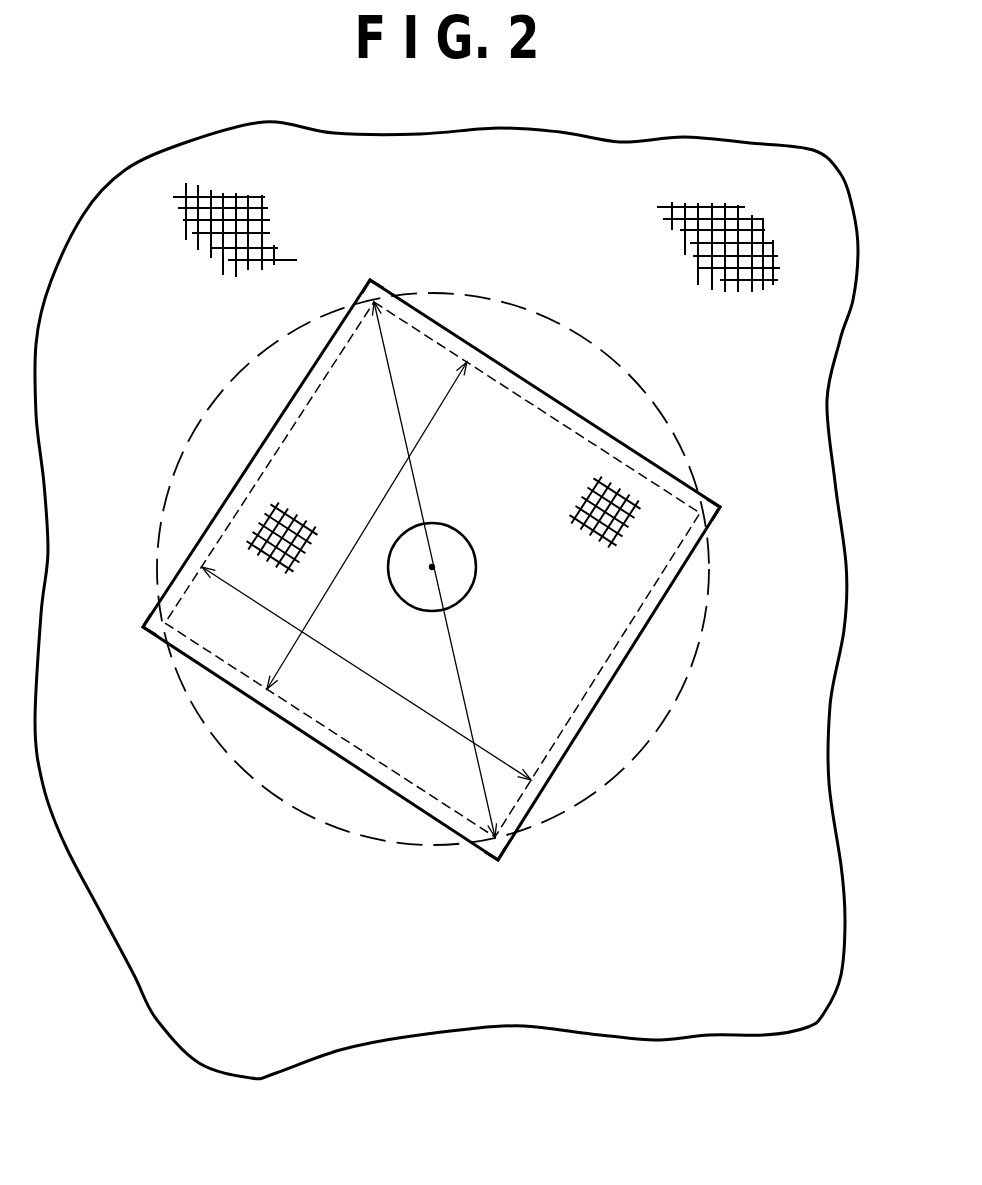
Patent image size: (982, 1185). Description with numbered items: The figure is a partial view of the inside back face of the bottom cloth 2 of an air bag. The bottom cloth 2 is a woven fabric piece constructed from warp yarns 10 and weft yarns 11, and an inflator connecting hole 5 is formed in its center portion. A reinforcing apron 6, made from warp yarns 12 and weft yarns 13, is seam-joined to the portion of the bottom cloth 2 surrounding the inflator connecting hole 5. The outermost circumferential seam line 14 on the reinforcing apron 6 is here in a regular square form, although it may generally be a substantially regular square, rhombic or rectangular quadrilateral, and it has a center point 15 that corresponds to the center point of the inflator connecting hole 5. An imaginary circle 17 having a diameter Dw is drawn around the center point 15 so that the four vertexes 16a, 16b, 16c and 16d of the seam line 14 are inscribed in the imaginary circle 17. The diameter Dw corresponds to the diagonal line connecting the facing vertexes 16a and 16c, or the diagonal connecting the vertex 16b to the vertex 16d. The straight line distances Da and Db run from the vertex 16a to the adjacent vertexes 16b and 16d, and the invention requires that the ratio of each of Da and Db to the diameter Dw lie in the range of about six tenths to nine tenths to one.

The bottom cloth 2 is at (789, 1012).
The inflator connecting hole 5 is at (476, 567).
The reinforcing apron 6 is at (615, 437).
The warp yarns 10 is at (739, 244).
The weft yarns 11 is at (766, 242).
The warp yarns 12 is at (661, 522).
The weft yarns 13 is at (627, 500).
The outermost circumferential seam line 14 is at (650, 478).
The center point 15 is at (433, 567).
The vertex 16a is at (380, 286).
The vertex 16b is at (163, 621).
The vertex 16c is at (507, 849).
The vertex 16d is at (722, 507).
The imaginary circle 17 is at (563, 325).
The straight line distance Da is at (376, 676).
The straight line distance Db is at (345, 562).
The diameter Dw is at (456, 674).